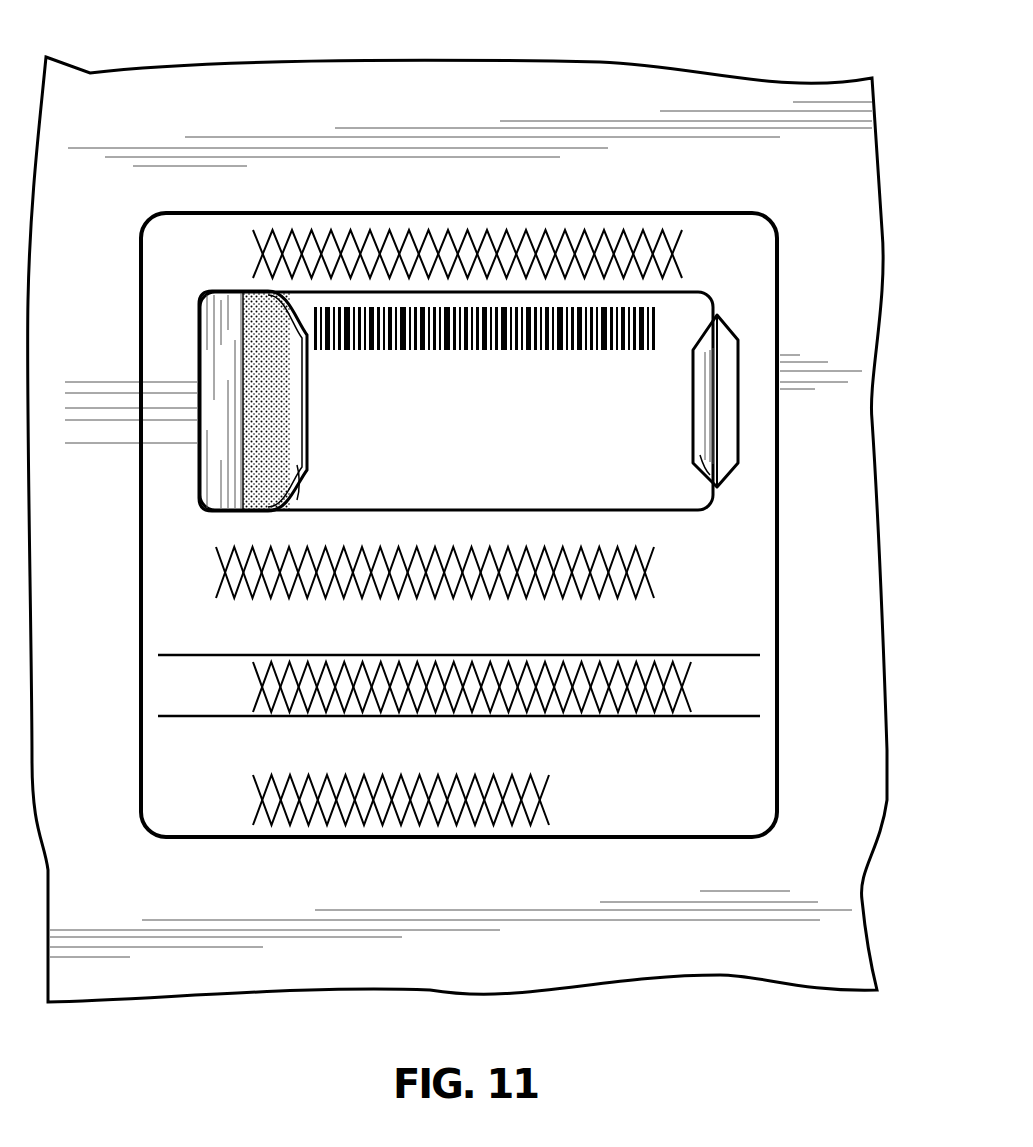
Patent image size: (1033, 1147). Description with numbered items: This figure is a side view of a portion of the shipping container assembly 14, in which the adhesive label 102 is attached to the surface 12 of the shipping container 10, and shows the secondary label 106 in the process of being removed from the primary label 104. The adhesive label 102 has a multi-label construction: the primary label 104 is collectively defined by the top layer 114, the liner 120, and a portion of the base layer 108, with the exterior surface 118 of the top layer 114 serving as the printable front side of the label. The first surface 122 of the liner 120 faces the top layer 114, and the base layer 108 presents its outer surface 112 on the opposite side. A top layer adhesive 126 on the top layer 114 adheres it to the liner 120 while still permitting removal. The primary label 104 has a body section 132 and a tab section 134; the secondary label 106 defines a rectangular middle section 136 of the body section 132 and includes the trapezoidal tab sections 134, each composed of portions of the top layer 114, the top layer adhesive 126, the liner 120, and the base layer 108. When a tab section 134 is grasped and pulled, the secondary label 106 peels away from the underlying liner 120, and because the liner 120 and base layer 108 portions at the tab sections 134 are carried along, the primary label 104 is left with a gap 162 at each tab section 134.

The shipping container assembly 14 is at (828, 74).
The adhesive label 102 is at (142, 840).
The primary label 104 is at (740, 608).
The secondary label 106 is at (685, 315).
The middle section 136 is at (553, 305).
The shipping container 10 is at (464, 422).
The surface 12 is at (464, 422).
The gap 162 is at (185, 360).
The base layer 108 is at (491, 330).
The outer surface 112 is at (300, 350).
The liner 120 is at (140, 374).
The first surface 122 is at (213, 316).
The top layer adhesive 126 is at (268, 483).
The tab section 134 is at (297, 465).
The body section 132 is at (738, 768).
The top layer 114 is at (518, 828).
The exterior surface 118 is at (628, 810).